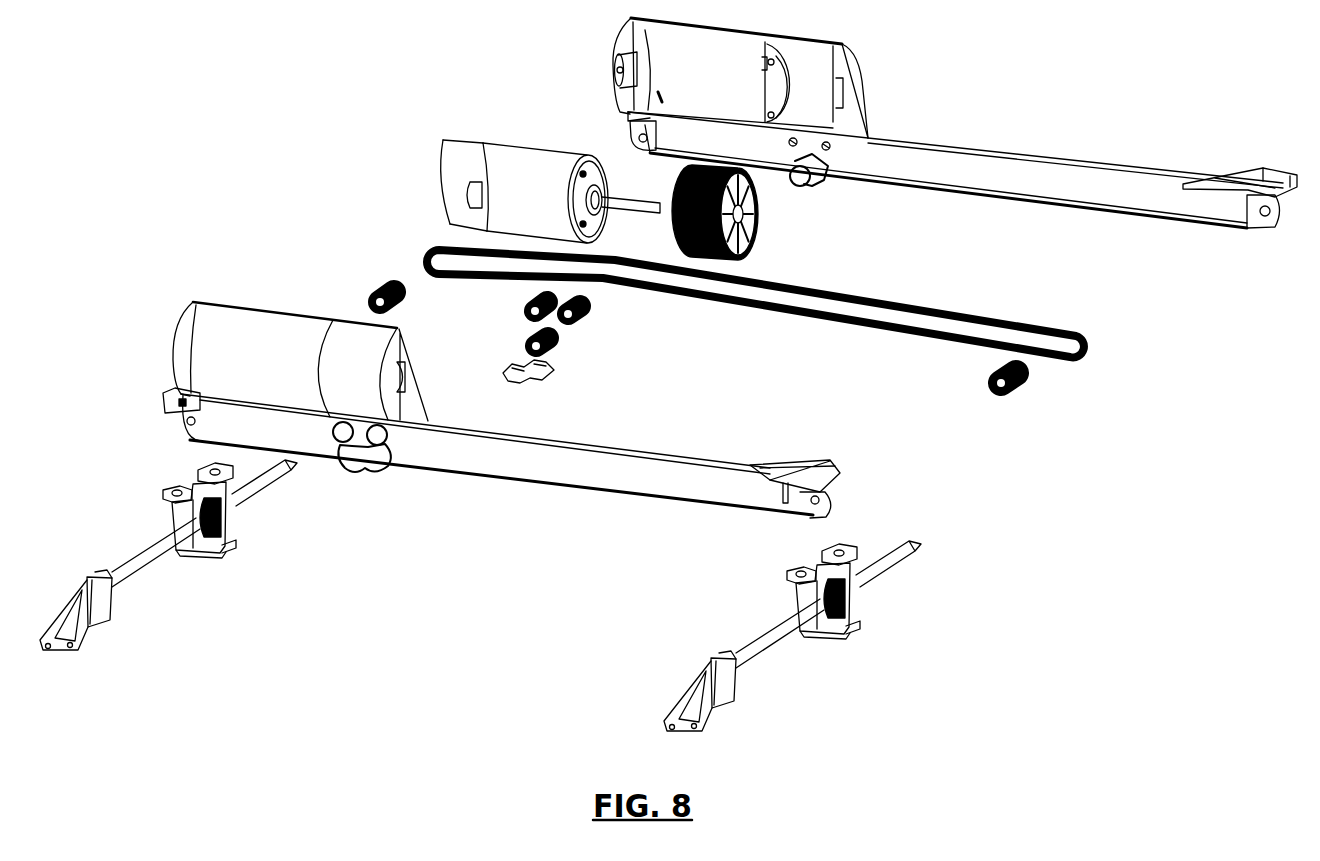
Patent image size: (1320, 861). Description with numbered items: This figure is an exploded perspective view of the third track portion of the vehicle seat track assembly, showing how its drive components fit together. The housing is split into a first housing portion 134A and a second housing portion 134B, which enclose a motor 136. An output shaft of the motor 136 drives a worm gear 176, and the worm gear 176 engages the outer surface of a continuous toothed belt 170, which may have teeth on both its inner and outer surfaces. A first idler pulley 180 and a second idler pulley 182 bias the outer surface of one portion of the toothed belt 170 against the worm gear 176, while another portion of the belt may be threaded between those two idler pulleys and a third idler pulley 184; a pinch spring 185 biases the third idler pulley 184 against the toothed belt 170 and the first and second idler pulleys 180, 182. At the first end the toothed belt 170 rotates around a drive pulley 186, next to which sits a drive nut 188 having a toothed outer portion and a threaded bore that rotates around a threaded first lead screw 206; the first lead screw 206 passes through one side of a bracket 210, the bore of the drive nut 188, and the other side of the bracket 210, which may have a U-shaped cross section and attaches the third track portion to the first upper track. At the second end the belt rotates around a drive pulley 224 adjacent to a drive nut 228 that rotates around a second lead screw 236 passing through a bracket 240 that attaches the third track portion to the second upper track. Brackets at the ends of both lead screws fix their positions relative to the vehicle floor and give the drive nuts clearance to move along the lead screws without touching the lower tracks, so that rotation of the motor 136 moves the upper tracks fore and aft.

The first housing portion 134A is at (537, 473).
The second housing portion 134B is at (975, 151).
The motor 136 is at (544, 195).
The toothed belt 170 is at (937, 307).
The worm gear 176 is at (758, 193).
The first idler pulley 180 is at (523, 302).
The second idler pulley 182 is at (589, 313).
The third idler pulley 184 is at (558, 345).
The pinch spring 185 is at (550, 377).
The drive pulley 186 is at (368, 289).
The drive nut 188 is at (217, 537).
The first lead screw 206 is at (247, 500).
The bracket 210 is at (185, 550).
The drive pulley 224 is at (1012, 392).
The drive nut 228 is at (847, 617).
The second lead screw 236 is at (880, 571).
The bracket 240 is at (830, 630).